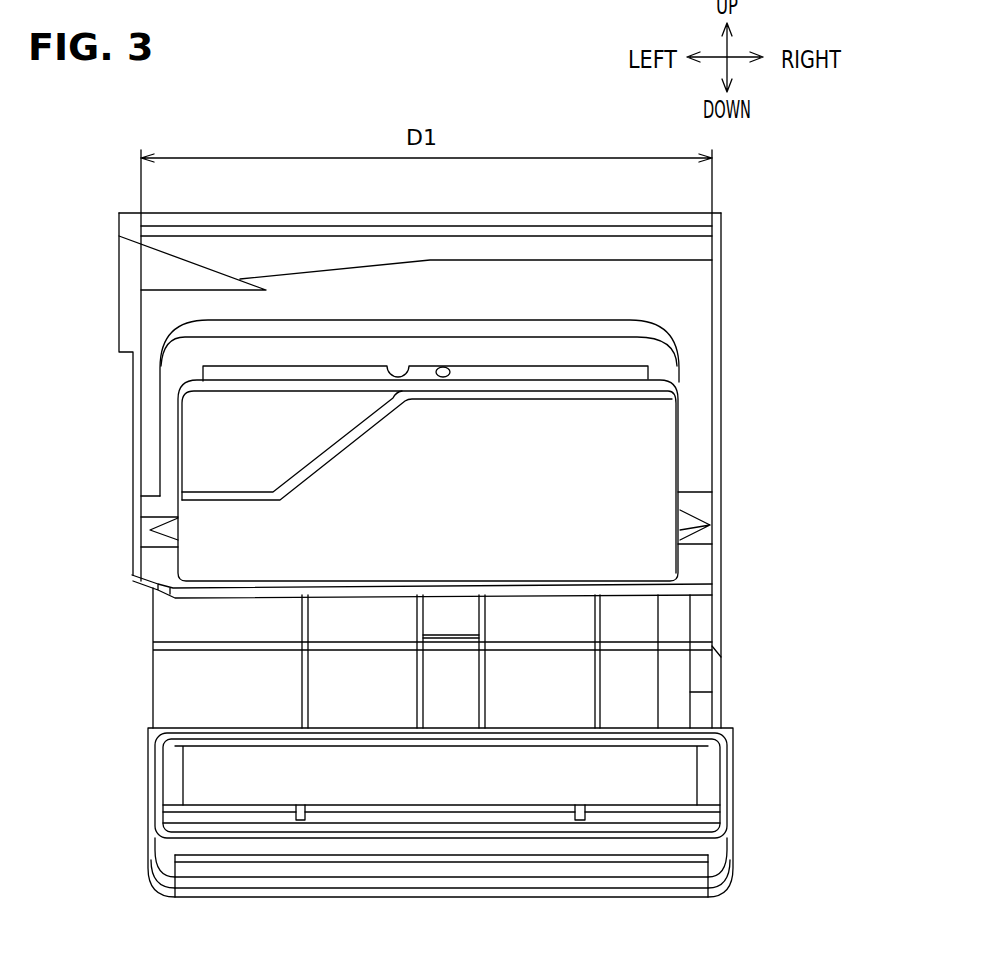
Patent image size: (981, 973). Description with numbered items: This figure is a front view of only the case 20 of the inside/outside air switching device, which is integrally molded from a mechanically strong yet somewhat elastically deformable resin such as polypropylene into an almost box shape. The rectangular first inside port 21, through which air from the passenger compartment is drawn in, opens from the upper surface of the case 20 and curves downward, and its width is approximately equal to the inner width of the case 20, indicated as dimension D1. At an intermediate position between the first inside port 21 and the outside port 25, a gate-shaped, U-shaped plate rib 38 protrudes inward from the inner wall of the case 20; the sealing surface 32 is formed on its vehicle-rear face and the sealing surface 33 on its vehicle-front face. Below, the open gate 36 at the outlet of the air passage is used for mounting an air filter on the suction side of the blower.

The case 20 is at (662, 295).
The first inside port 21 is at (596, 436).
The outside port 25 is at (518, 212).
The sealing surface 32 is at (509, 408).
The sealing surface 33 is at (692, 395).
The open gate 36 is at (397, 782).
The plate rib 38 is at (509, 408).